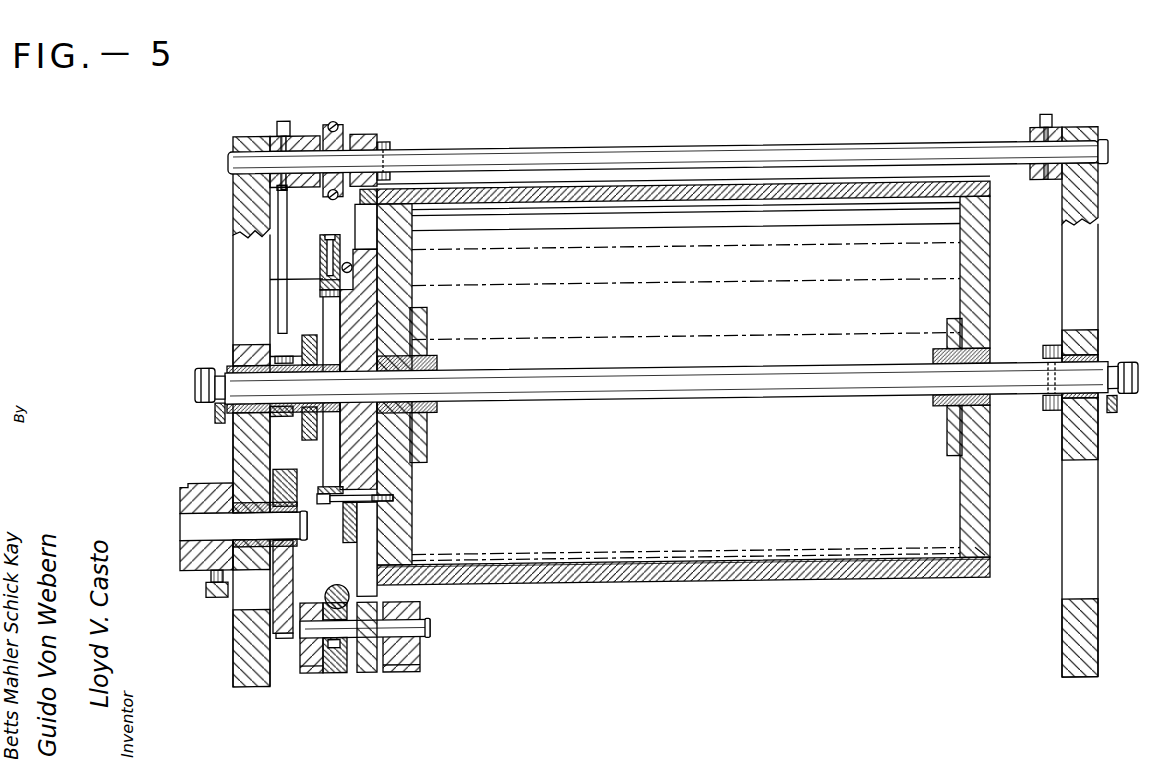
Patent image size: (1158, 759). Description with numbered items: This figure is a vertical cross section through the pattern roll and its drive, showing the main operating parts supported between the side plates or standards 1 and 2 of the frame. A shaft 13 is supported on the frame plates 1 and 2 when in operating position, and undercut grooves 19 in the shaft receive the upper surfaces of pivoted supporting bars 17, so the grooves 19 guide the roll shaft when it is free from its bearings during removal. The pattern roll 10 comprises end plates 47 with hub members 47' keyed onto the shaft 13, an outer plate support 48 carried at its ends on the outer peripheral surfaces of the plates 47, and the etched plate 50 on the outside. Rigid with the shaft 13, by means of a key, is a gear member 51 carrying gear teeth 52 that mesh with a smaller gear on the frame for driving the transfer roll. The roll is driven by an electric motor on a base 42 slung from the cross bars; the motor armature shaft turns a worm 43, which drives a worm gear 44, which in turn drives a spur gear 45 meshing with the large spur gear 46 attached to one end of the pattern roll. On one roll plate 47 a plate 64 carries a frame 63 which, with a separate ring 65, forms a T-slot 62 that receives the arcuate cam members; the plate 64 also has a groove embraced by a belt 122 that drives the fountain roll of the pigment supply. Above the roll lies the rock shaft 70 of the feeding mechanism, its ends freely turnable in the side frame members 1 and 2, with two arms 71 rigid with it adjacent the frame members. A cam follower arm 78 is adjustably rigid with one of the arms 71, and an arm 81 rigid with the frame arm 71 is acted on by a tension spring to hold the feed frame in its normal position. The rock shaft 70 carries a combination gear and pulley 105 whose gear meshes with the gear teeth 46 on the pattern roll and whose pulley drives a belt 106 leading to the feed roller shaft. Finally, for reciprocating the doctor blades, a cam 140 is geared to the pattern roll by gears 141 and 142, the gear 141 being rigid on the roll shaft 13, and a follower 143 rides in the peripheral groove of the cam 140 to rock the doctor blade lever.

The side plate 1 is at (240, 202).
The side plate 2 is at (1094, 141).
The pattern roll 10 is at (986, 556).
The shaft 13 is at (595, 356).
The pivoted supporting bar 17 is at (216, 419).
The undercut groove 19 is at (213, 372).
The motor base 42 is at (305, 680).
The worm 43 is at (336, 595).
The worm gear 44 is at (337, 660).
The spur gear 45 is at (369, 678).
The large spur gear 46 is at (390, 193).
The end plate 47 is at (951, 377).
The hub member 47' is at (683, 381).
The outer plate support 48 is at (521, 572).
The etched plate 50 is at (574, 591).
The gear member 51 is at (290, 357).
The gear teeth 52 is at (309, 339).
The T-slot 62 is at (325, 259).
The frame 63 is at (333, 239).
The plate 64 is at (395, 305).
The ring 65 is at (325, 283).
The rock shaft 70 is at (946, 160).
The arm 71 is at (282, 136).
The cam follower arm 78 is at (301, 141).
The arm 81 is at (280, 268).
The combination gear and pulley 105 is at (366, 140).
The belt 106 is at (336, 126).
The belt 122 is at (353, 274).
The cam 140 is at (190, 559).
The gear 141 is at (278, 346).
The gear 142 is at (287, 597).
The follower 143 is at (211, 585).